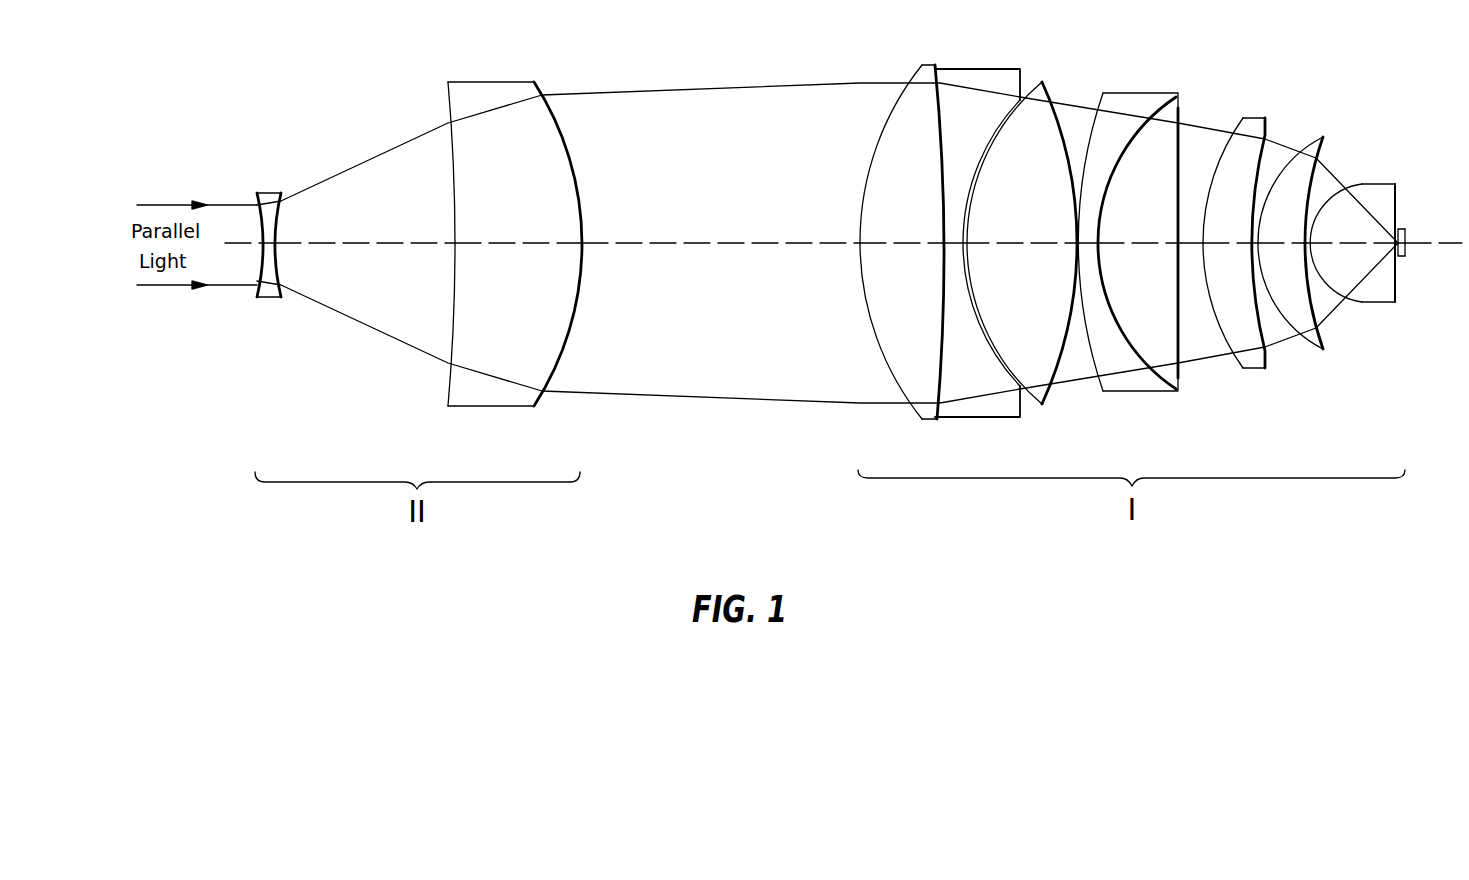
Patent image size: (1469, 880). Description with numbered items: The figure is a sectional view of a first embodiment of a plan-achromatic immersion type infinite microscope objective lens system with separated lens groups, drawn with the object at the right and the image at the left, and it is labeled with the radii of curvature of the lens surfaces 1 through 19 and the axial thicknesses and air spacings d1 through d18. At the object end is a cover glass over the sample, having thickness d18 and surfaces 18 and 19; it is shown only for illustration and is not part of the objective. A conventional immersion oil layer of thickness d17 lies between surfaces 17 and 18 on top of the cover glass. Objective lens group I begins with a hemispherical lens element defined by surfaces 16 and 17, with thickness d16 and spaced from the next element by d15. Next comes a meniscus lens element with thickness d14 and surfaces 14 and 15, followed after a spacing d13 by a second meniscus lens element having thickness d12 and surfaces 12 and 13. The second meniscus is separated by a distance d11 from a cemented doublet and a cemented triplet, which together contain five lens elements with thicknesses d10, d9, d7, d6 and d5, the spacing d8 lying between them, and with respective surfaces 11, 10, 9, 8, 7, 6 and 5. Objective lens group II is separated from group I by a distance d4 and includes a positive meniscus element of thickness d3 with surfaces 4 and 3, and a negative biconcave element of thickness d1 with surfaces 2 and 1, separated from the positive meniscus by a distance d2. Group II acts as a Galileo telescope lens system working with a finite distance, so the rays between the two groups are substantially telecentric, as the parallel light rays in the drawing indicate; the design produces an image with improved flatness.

The surface r1 1 is at (257, 231).
The surface r2 2 is at (279, 219).
The surface r3 3 is at (452, 182).
The surface r4 4 is at (575, 170).
The surface r5 5 is at (871, 157).
The surface r6 6 is at (941, 134).
The surface r7 7 is at (997, 131).
The surface r8 8 is at (1058, 118).
The surface r9 9 is at (1092, 128).
The surface r10 10 is at (1133, 130).
The surface r11 11 is at (1181, 150).
The surface r12 12 is at (1214, 160).
The surface r13 13 is at (1263, 157).
The surface r14 14 is at (1283, 160).
The surface r15 15 is at (1318, 165).
The surface r16 16 is at (1340, 186).
The surface r17 17 is at (1395, 198).
The surface r18 18 is at (1398, 226).
The surface r19 19 is at (1405, 239).
The thickness d1 is at (277, 258).
The distance d2 is at (382, 245).
The thickness d3 is at (511, 243).
The distance d4 is at (743, 245).
The thickness d5 is at (894, 244).
The thickness d6 is at (951, 250).
The thickness d7 is at (1006, 244).
The thickness d8 is at (1077, 253).
The thickness d9 is at (1088, 246).
The thickness d10 is at (1141, 244).
The distance d11 is at (1189, 246).
The thickness d12 is at (1217, 244).
The distance d13 is at (1264, 262).
The thickness d14 is at (1268, 246).
The distance d15 is at (1331, 306).
The thickness d16 is at (1325, 244).
The thickness d17 is at (1397, 247).
The thickness d18 is at (1407, 244).